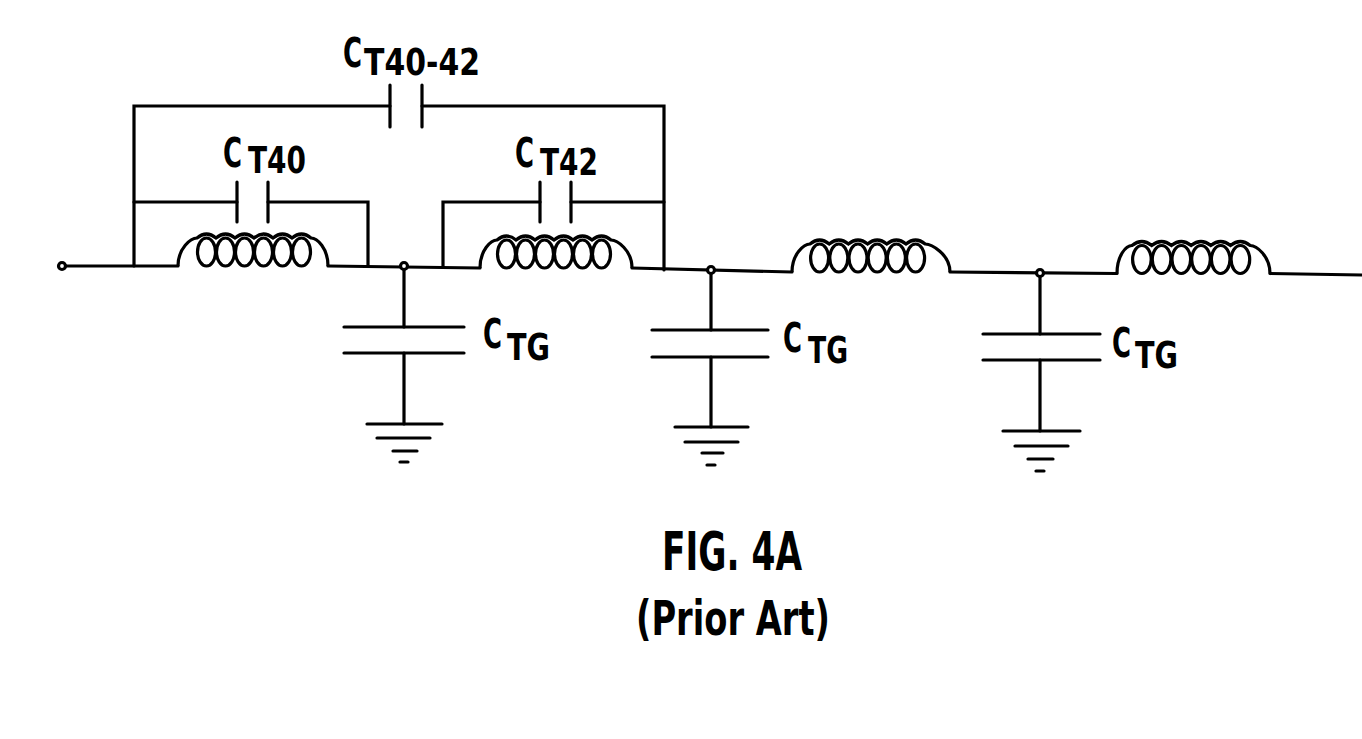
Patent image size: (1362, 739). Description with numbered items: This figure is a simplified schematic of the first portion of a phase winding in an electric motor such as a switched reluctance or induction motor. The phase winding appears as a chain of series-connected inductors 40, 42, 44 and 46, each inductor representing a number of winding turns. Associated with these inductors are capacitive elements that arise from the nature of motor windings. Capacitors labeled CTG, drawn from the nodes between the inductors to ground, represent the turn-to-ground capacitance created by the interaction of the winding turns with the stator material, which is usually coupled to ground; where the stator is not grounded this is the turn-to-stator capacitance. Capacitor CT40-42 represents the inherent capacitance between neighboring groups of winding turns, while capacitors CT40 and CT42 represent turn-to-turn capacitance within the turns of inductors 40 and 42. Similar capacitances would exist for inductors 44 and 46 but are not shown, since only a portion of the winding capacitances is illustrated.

The inductor 40 is at (253, 271).
The inductor 42 is at (556, 274).
The inductor 44 is at (871, 279).
The inductor 46 is at (1193, 282).